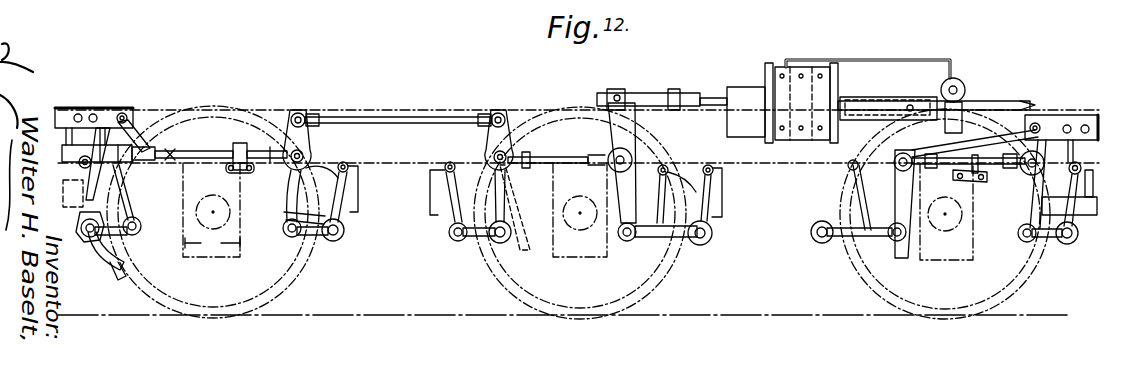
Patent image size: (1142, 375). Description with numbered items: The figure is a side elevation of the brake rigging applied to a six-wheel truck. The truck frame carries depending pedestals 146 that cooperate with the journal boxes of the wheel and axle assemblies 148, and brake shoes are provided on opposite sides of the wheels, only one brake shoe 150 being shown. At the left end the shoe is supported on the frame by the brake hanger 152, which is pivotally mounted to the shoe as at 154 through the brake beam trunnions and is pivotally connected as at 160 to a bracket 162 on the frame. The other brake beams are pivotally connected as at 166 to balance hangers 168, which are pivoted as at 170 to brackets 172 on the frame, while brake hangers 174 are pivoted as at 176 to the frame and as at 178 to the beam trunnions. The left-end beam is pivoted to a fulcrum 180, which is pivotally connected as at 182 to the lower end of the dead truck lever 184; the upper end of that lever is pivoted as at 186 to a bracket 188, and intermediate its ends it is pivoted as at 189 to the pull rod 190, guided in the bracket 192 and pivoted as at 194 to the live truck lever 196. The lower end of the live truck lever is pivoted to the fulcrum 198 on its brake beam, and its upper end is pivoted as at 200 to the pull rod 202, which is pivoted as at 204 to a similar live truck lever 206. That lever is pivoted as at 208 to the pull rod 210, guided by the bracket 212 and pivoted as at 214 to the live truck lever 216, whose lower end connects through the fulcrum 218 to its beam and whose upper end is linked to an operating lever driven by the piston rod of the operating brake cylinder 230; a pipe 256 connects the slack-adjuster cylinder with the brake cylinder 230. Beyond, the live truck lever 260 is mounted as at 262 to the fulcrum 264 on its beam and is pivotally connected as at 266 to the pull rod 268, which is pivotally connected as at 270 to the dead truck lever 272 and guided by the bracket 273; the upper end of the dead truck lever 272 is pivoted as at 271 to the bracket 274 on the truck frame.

The depending pedestal 146 is at (211, 210).
The wheel and axle assembly 148 is at (262, 297).
The brake shoe 150 is at (132, 258).
The brake hanger 152 is at (60, 150).
The pivotal mounting of brake hanger to brake shoe 154 is at (120, 279).
The pivotal connection of brake hanger to bracket 160 is at (85, 156).
The bracket 162 is at (103, 128).
The pivotal connection of brake beams to balance hangers 166 is at (302, 238).
The balance hanger 168 is at (283, 236).
The pivot of balance hanger to bracket 170 is at (268, 192).
The bracket 172 is at (343, 161).
The brake hanger 174 is at (350, 190).
The pivot of brake hanger to truck frame 176 is at (360, 168).
The pivot of brake hanger to brake beam trunnions 178 is at (352, 222).
The fulcrum 180 is at (170, 240).
The pivotal connection of fulcrum to dead truck lever 182 is at (140, 182).
The dead truck lever 184 is at (141, 140).
The pivot of dead truck lever to bracket 186 is at (124, 114).
The bracket 188 is at (74, 108).
The pivot of dead truck lever to pull rod 189 is at (176, 151).
The pull rod 190 is at (205, 150).
The bracket 192 is at (240, 143).
The pivot of pull rod to live truck lever 194 is at (303, 190).
The live truck lever 196 is at (303, 128).
The fulcrum 198 is at (333, 241).
The pivot of live truck lever to pull rod 200 is at (297, 112).
The pull rod 202 is at (412, 117).
The pivot of pull rod to live truck lever 204 is at (503, 175).
The live truck lever 206 is at (489, 120).
The pivot of live truck lever to pull rod 208 is at (508, 152).
The pull rod 210 is at (573, 157).
The bracket 212 is at (522, 252).
The pivot of pull rod to live truck lever 214 is at (638, 142).
The live truck lever 216 is at (640, 94).
The fulcrum 218 is at (705, 246).
The operating brake cylinder 230 is at (796, 140).
The pipe 256 is at (830, 60).
The live truck lever 260 is at (890, 97).
The pivotal mounting of live truck lever to fulcrum 262 is at (903, 260).
The fulcrum 264 is at (878, 240).
The pivotal connection of live truck lever to pull rod 266 is at (906, 153).
The pull rod 268 is at (925, 152).
The pivotal connection of pull rod to dead truck lever 270 is at (1028, 168).
The pivotal connection of dead truck lever to bracket 271 is at (1037, 123).
The dead truck lever 272 is at (1040, 152).
The bracket 273 is at (977, 155).
The bracket 274 is at (1080, 115).